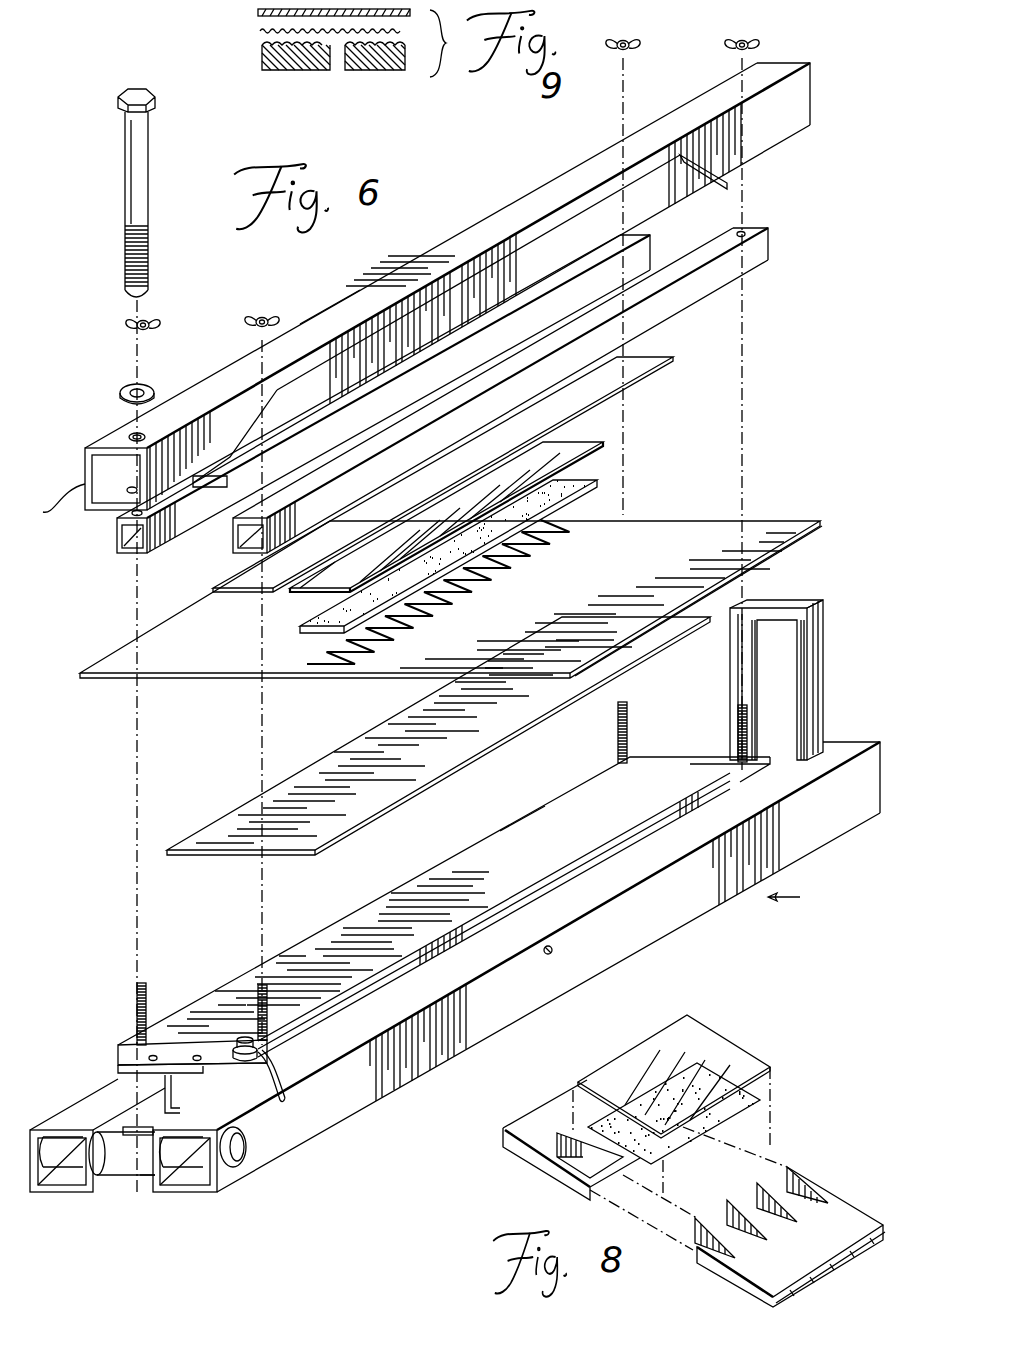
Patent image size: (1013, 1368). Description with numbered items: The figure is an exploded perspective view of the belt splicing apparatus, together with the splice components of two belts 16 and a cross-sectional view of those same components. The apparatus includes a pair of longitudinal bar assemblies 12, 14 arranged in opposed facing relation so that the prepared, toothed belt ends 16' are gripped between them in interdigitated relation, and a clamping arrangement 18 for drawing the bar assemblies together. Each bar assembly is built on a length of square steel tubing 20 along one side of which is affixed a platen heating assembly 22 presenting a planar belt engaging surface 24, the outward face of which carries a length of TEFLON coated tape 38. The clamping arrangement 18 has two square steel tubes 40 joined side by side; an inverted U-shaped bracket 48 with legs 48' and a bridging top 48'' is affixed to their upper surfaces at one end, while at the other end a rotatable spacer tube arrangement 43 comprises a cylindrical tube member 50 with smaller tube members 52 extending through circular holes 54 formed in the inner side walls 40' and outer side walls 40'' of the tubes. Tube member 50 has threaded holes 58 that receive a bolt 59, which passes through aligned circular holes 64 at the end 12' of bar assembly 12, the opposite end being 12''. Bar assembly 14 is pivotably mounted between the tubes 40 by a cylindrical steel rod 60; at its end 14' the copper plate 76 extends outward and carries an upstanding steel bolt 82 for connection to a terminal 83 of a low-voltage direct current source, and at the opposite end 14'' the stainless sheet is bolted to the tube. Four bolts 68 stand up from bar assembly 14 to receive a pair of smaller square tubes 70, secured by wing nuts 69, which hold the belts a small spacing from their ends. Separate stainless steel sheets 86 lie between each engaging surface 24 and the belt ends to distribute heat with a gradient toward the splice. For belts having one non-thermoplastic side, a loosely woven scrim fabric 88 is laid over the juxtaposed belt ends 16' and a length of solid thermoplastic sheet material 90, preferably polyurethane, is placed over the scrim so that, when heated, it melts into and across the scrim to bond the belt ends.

In FIG. 6, the bar assembly 12 is at (447, 286).
In FIG. 6, the end of bar assembly 12' is at (95, 466).
In FIG. 6, the end of bar assembly 12'' is at (808, 94).
In FIG. 6, the bar assembly 14 is at (444, 944).
In FIG. 6, the end of bar assembly 14' is at (192, 1085).
In FIG. 6, the end of bar assembly 14'' is at (754, 771).
In FIG. 6, the belt 16 is at (451, 591).
In FIG. 9, the belt end 16' is at (333, 71).
In FIG. 6, the belt end 16' is at (422, 620).
In FIG. 8, the belt end 16' is at (691, 1193).
In FIG. 6, the clamping arrangement 18 is at (803, 897).
In FIG. 6, the square steel tubing 20 is at (355, 293).
In FIG. 6, the platen heating assembly 22 is at (727, 184).
In FIG. 6, the belt engaging surface 24 is at (728, 200).
In FIG. 6, the TEFLON resin coated tape 38 is at (601, 246).
In FIG. 6, the square steel tube 40 is at (455, 967).
In FIG. 6, the inner side wall 40' is at (70, 1176).
In FIG. 6, the outer side wall 40'' is at (222, 1169).
In FIG. 6, the spacer tube arrangement 43 is at (150, 1180).
In FIG. 6, the U-shaped steel bracket 48 is at (797, 680).
In FIG. 6, the bracket legs 48' is at (781, 687).
In FIG. 6, the bracket top 48'' is at (783, 588).
In FIG. 6, the cylindrical steel tube member 50 is at (128, 1180).
In FIG. 6, the cylindrical steel tube members 52 is at (72, 1160).
In FIG. 6, the circular holes 54 is at (40, 1148).
In FIG. 6, the threaded holes 58 is at (155, 1117).
In FIG. 6, the bolt 59 is at (128, 165).
In FIG. 6, the cylindrical steel rod 60 is at (548, 957).
In FIG. 6, the circular holes 64 is at (128, 416).
In FIG. 6, the bolts 68 is at (618, 730).
In FIG. 6, the wing nuts 69 is at (152, 322).
In FIG. 6, the square steel tubes 70 is at (700, 290).
In FIG. 6, the copper plate 76 is at (248, 1142).
In FIG. 6, the steel bolt 82 is at (262, 1048).
In FIG. 6, the terminal 83 is at (272, 1068).
In FIG. 6, the stainless steel sheet 86 is at (673, 360).
In FIG. 9, the scrim fabric 88 is at (262, 31).
In FIG. 6, the scrim fabric 88 is at (598, 484).
In FIG. 8, the scrim fabric 88 is at (760, 1108).
In FIG. 9, the thermoplastic sheet material 90 is at (258, 13).
In FIG. 6, the thermoplastic sheet material 90 is at (604, 445).
In FIG. 8, the thermoplastic sheet material 90 is at (738, 1060).